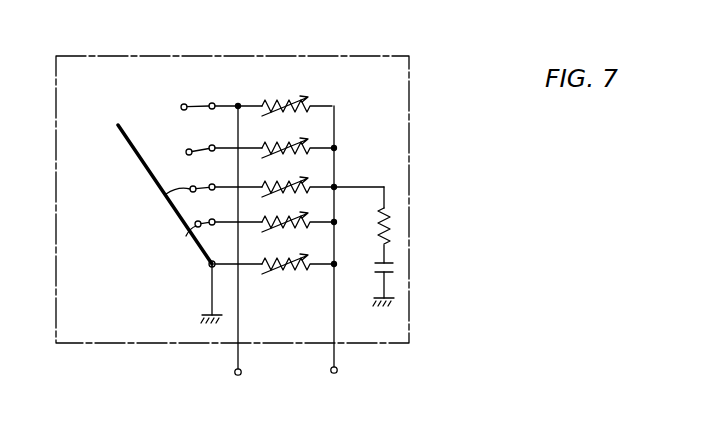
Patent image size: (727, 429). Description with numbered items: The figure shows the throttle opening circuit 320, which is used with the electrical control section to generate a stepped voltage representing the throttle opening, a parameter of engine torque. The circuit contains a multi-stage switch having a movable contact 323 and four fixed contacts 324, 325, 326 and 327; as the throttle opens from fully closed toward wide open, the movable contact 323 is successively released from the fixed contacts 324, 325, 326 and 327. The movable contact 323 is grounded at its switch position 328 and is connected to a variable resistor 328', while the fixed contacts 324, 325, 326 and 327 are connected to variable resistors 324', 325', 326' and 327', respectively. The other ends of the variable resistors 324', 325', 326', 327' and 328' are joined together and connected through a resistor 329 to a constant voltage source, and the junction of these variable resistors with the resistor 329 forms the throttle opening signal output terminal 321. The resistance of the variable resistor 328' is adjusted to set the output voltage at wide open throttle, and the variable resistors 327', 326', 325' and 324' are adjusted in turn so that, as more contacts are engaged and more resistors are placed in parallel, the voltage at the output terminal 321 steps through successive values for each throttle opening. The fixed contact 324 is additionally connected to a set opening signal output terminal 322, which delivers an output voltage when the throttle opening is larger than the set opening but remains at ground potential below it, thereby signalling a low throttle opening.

The throttle opening circuit 320 is at (410, 63).
The throttle opening signal output terminal 321 is at (333, 372).
The set opening signal output terminal 322 is at (234, 373).
The movable contact 323 is at (130, 143).
The fixed contact 324 is at (200, 93).
The fixed contact 325 is at (201, 141).
The fixed contact 326 is at (180, 202).
The fixed contact 327 is at (197, 238).
The switch contact 328 is at (203, 279).
The variable resistor 324' is at (321, 96).
The variable resistor 325' is at (326, 138).
The variable resistor 326' is at (326, 177).
The variable resistor 327' is at (290, 234).
The variable resistor 328' is at (299, 282).
The resistor 329 is at (392, 234).